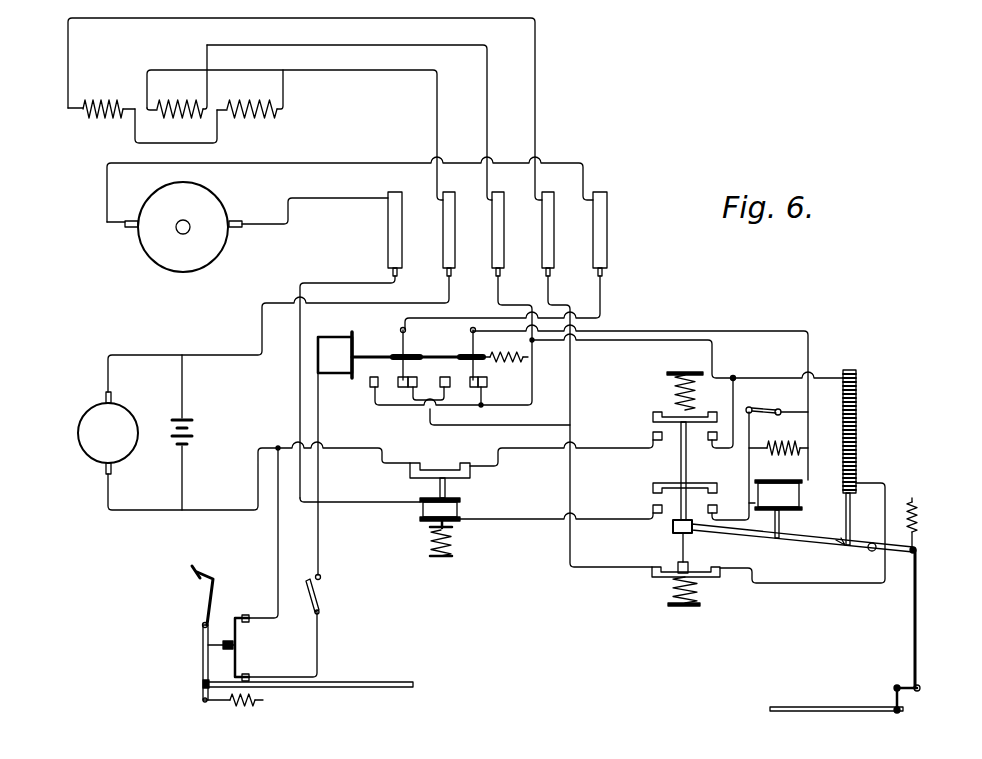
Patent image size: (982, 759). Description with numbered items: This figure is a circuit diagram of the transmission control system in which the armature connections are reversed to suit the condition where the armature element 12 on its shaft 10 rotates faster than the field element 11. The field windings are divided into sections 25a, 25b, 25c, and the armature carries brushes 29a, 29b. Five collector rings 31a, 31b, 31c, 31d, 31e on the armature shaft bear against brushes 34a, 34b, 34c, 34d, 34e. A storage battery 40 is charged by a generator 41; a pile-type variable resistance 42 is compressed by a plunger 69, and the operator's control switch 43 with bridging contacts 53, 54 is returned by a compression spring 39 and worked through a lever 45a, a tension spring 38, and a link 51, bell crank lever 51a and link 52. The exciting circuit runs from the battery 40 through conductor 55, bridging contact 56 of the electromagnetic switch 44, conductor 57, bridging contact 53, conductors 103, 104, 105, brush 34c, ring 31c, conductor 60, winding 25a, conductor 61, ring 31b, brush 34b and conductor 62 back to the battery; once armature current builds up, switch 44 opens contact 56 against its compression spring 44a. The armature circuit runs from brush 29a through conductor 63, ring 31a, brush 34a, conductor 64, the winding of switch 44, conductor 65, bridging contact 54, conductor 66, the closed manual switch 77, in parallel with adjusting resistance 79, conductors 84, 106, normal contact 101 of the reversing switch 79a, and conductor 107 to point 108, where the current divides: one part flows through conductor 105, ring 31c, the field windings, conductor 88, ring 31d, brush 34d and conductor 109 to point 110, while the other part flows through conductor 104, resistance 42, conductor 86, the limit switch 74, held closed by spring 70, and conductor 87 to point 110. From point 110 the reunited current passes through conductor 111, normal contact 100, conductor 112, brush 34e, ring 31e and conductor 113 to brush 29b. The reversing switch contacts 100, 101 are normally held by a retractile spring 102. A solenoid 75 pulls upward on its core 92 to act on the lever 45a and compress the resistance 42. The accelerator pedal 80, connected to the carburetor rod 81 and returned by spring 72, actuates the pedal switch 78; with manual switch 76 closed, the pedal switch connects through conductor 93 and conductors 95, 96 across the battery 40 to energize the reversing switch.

The shaft 10 is at (190, 227).
The field element 11 is at (175, 90).
The armature element 12 is at (175, 225).
The field winding section 25a is at (177, 81).
The field winding section 25b is at (101, 99).
The field winding section 25c is at (250, 94).
The armature brush 29a is at (235, 229).
The armature brush 29b is at (129, 229).
The collector ring 31a is at (405, 190).
The collector ring 31b is at (456, 196).
The collector ring 31c is at (505, 196).
The collector ring 31d is at (555, 196).
The collector ring 31e is at (604, 198).
The brush 34a is at (390, 278).
The brush 34b is at (446, 278).
The brush 34c is at (497, 279).
The brush 34d is at (546, 279).
The brush 34e is at (603, 280).
The tension spring 38 is at (920, 506).
The return spring 39 is at (675, 390).
The storage battery 40 is at (194, 437).
The generator 41 is at (73, 431).
The variable resistance 42 is at (860, 402).
The control switch 43 is at (649, 410).
The electromagnetic switch 44 is at (462, 508).
The compression spring 44a is at (432, 540).
The lever 45a is at (802, 548).
The link 51 is at (800, 707).
The bell crank lever 51a is at (894, 683).
The link 52 is at (918, 578).
The bridging contact 53 is at (695, 411).
The bridging contact 54 is at (690, 484).
The conductor 55 is at (194, 508).
The bridging contact 56 is at (430, 468).
The conductor 57 is at (591, 450).
The conductor 60 is at (489, 100).
The conductor 61 is at (440, 100).
The conductor 62 is at (390, 304).
The conductor 63 is at (308, 205).
The conductor 64 is at (293, 399).
The conductor 65 is at (594, 518).
The conductor 66 is at (745, 478).
The plunger 69 is at (845, 528).
The compression spring 70 is at (698, 596).
The return spring 72 is at (238, 708).
The limit switch 74 is at (656, 579).
The electromagnetic actuator 75 is at (797, 492).
The manual switch 76 is at (318, 592).
The manual switch 77 is at (779, 409).
The pedal actuated switch 78 is at (239, 648).
The adjusting resistance 79 is at (772, 458).
The reversing switch 79a is at (346, 336).
The accelerator pedal 80 is at (215, 588).
The rod 81 is at (365, 682).
The conductor 84 is at (808, 433).
The conductor 86 is at (803, 594).
The conductor 87 is at (566, 490).
The conductor 88 is at (540, 100).
The core 92 is at (780, 528).
The conductor 93 is at (270, 556).
The conductor 95 is at (321, 413).
The conductor 96 is at (354, 333).
The movable contact 100 is at (408, 352).
The movable contact 101 is at (432, 388).
The retractile spring 102 is at (486, 390).
The conductor 103 is at (728, 402).
The conductor 104 is at (672, 340).
The conductor 105 is at (505, 306).
The conductor 106 is at (745, 331).
The conductor 107 is at (383, 410).
The point 108 is at (536, 350).
The conductor 109 is at (556, 305).
The point 110 is at (573, 426).
The conductor 111 is at (480, 418).
The conductor 112 is at (453, 318).
The conductor 113 is at (290, 163).